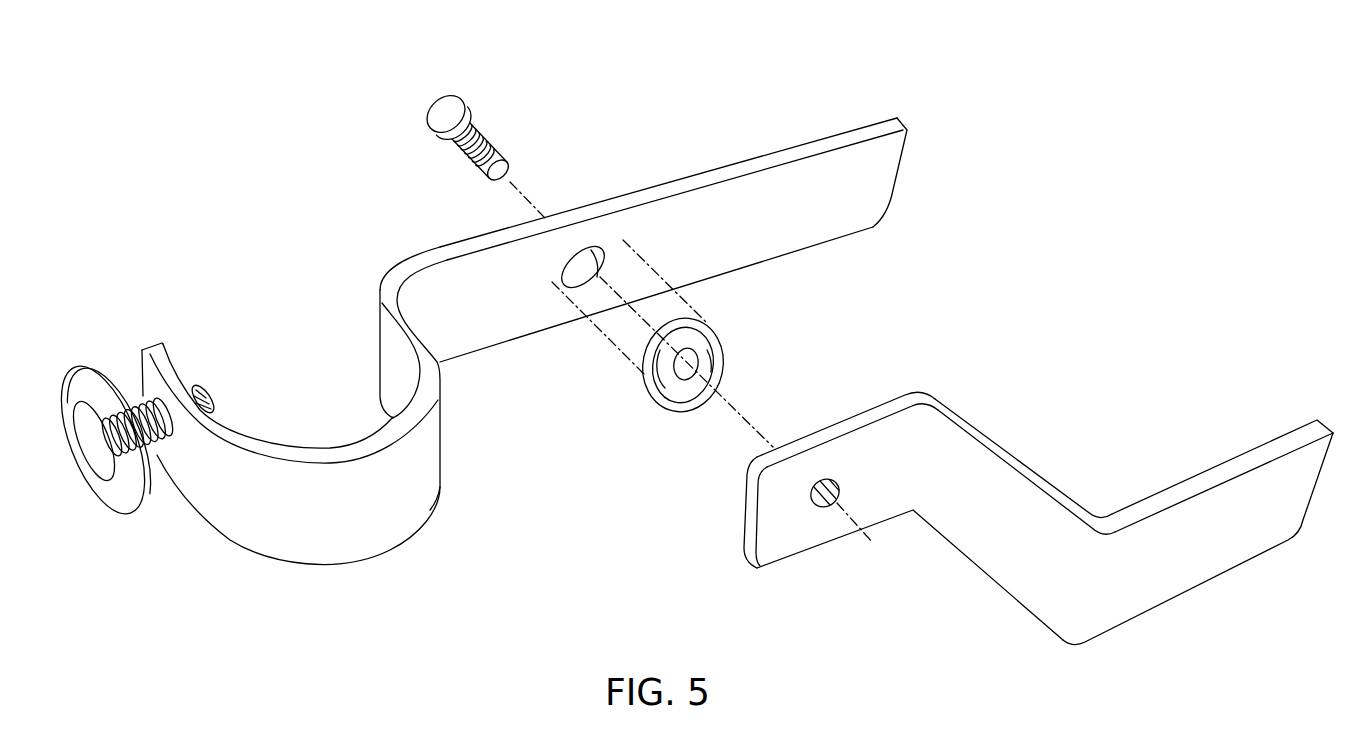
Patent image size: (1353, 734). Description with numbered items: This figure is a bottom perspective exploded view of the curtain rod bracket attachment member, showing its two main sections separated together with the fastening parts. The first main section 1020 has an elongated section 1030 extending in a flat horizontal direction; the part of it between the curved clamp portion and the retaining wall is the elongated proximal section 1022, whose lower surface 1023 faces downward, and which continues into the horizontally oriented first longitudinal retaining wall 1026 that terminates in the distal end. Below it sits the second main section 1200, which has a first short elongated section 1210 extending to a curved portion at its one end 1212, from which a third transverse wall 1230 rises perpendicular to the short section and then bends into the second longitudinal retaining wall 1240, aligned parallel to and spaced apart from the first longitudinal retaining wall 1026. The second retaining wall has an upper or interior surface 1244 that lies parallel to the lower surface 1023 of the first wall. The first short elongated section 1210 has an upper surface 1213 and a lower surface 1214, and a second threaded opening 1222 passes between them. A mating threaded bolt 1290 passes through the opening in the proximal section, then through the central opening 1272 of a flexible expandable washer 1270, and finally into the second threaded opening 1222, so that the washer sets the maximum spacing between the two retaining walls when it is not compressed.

The first main section 1020 is at (307, 158).
The elongated proximal section 1022 is at (423, 225).
The lower surface 1023 is at (840, 232).
The first longitudinal retaining wall 1026 is at (777, 123).
The elongated section 1030 is at (633, 162).
The second longitudinal retaining wall 1240 is at (584, 287).
The flexible expandable washer 1270 is at (727, 343).
The central opening 1272 is at (683, 372).
The mating threaded bolt 1290 is at (495, 93).
The second main section 1200 is at (737, 569).
The first short elongated section 1210 is at (900, 362).
The end 1212 is at (832, 430).
The upper surface 1213 is at (913, 505).
The lower surface 1214 is at (802, 442).
The second threaded opening 1222 is at (820, 507).
The third transverse wall 1230 is at (990, 430).
The upper surface 1244 is at (1200, 473).